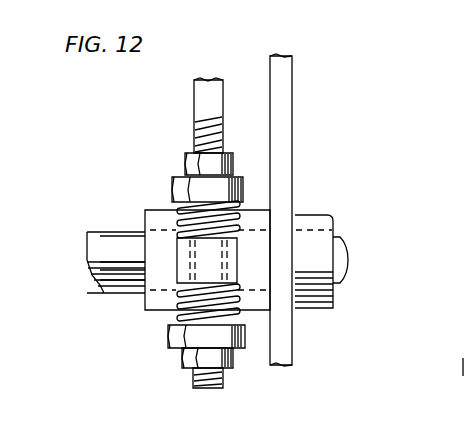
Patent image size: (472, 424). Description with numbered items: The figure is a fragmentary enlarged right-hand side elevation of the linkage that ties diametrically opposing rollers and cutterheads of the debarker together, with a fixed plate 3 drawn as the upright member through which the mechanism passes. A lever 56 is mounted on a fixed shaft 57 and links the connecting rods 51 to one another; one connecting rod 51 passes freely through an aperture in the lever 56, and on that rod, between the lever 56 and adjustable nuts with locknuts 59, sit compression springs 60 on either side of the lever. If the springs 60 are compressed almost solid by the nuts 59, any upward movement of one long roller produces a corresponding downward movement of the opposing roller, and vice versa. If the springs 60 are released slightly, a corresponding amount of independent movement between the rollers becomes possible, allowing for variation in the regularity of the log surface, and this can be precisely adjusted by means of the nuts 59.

The plate 3 is at (285, 101).
The connecting rod 51 is at (196, 116).
The lever 56 is at (178, 242).
The fixed shaft 57 is at (95, 243).
The adjustable nuts with locknuts 59 is at (173, 184).
The compression springs 60 is at (237, 210).